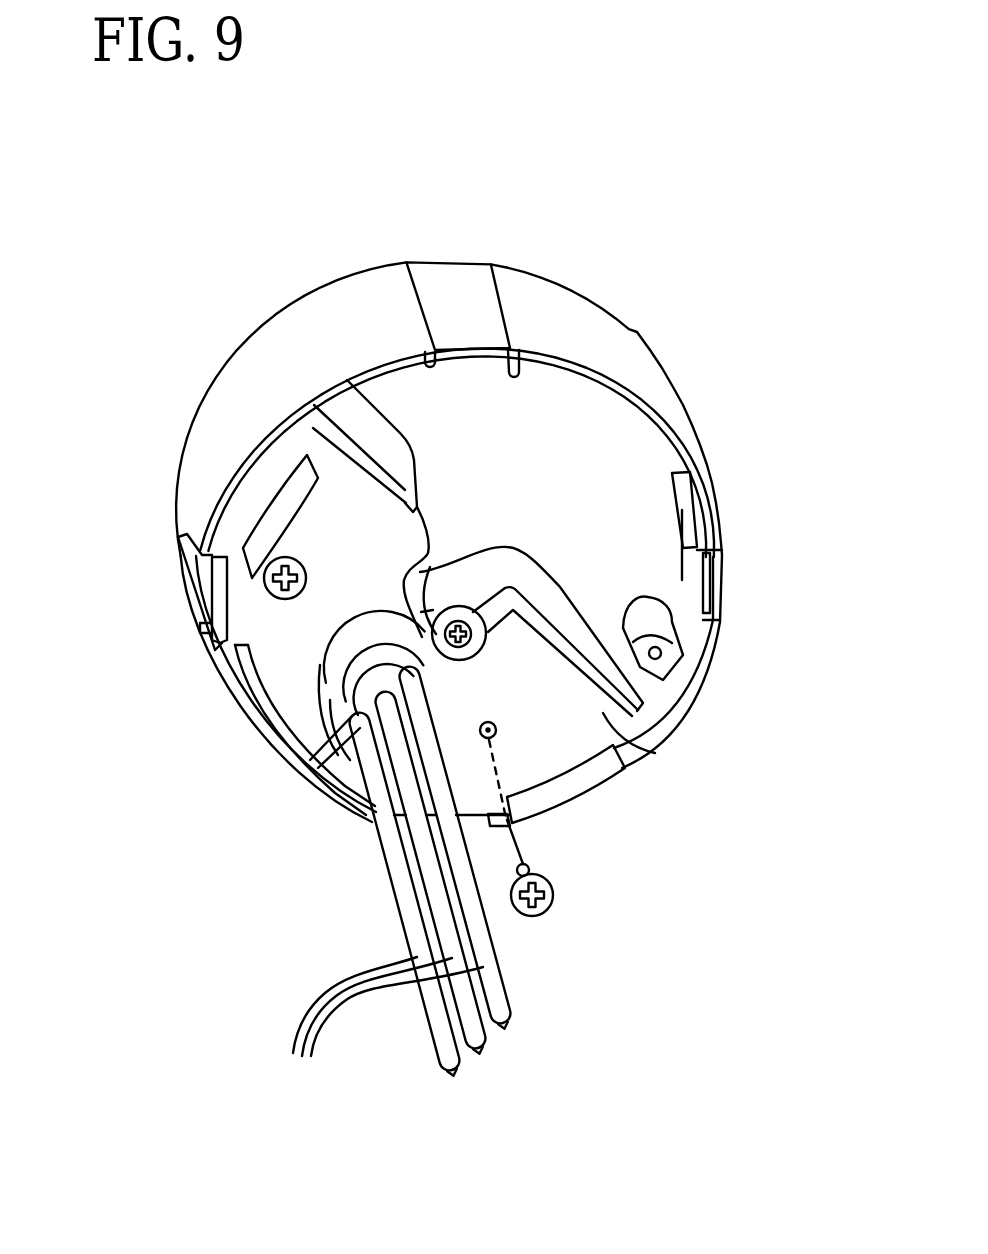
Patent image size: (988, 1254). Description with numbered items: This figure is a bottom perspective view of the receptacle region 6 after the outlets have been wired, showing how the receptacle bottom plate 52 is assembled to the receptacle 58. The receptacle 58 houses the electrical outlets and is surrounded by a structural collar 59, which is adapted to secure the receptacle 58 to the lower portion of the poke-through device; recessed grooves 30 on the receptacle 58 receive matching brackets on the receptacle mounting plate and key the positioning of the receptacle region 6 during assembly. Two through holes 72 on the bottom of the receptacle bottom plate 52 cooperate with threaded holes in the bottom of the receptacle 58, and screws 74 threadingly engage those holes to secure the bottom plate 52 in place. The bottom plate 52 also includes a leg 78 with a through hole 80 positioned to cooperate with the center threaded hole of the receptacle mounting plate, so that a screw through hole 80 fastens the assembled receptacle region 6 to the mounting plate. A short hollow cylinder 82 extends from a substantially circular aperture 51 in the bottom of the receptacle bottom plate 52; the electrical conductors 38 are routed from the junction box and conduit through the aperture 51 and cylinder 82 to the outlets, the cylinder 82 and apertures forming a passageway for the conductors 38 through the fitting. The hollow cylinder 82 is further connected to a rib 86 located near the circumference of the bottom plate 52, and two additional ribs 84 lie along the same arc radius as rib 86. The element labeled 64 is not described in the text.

The receptacle region 6 is at (288, 341).
The recessed groove 30 is at (462, 286).
The electrical conductors 38 is at (382, 1024).
The circular aperture 51 is at (361, 692).
The receptacle bottom plate 52 is at (657, 753).
The receptacle 58 is at (230, 384).
The structural collar 59 is at (351, 283).
The latch member 64 is at (657, 613).
The through hole 72 is at (595, 777).
The screw 74 is at (212, 652).
The leg 78 is at (422, 572).
The through hole 80 is at (470, 648).
The hollow cylinder 82 is at (268, 654).
The rib 84 is at (273, 502).
The rib 86 is at (308, 780).